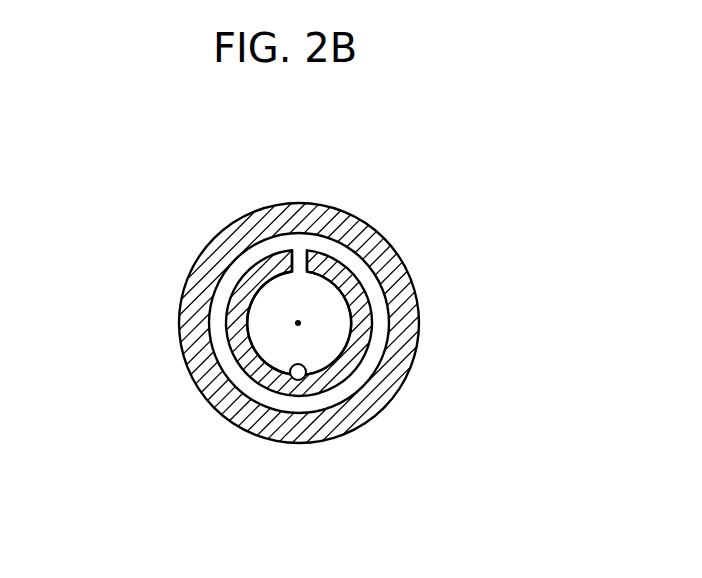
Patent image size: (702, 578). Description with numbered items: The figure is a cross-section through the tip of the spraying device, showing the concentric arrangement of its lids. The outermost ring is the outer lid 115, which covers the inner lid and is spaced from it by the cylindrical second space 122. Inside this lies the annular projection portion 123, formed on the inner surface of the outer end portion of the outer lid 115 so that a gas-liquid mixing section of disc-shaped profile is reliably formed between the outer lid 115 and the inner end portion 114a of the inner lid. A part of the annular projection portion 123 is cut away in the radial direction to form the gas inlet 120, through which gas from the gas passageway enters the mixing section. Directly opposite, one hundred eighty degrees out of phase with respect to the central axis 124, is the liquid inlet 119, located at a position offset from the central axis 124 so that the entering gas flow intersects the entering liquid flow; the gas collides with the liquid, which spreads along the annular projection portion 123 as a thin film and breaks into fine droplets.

The inner end portion 114a is at (320, 290).
The outer lid 115 is at (403, 317).
The liquid inlet 119 is at (306, 371).
The gas inlet 120 is at (298, 258).
The second space 122 is at (298, 408).
The annular projection portion 123 is at (250, 280).
The central axis 124 is at (296, 323).